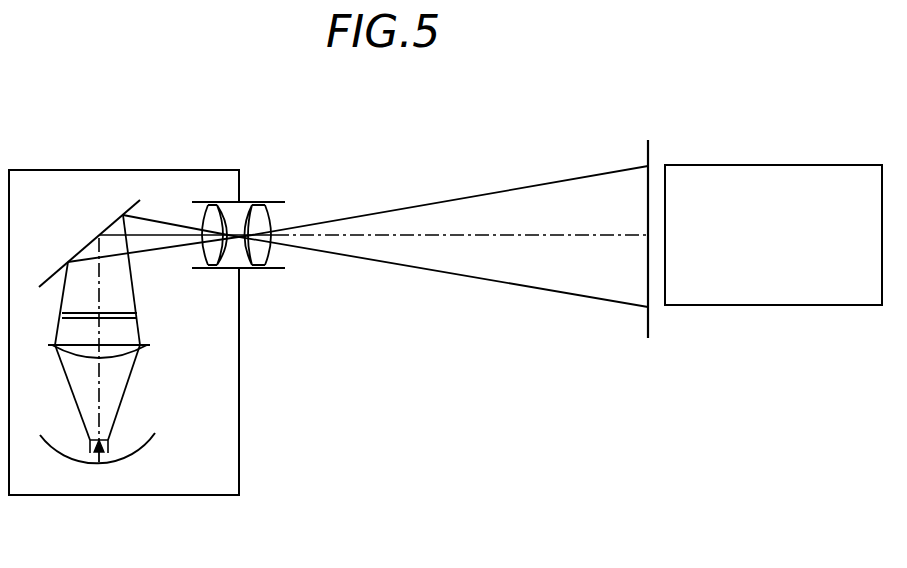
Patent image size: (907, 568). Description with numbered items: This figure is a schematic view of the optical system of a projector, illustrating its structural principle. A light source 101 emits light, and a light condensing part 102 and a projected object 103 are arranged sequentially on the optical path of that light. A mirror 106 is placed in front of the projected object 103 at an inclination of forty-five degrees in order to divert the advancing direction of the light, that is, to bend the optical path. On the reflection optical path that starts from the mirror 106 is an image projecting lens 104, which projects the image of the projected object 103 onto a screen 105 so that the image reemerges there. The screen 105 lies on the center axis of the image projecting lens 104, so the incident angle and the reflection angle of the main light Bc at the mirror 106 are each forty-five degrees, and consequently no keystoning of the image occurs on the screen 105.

The light source 101 is at (145, 445).
The light condensing part 102 is at (130, 353).
The projected object 103 is at (133, 316).
The image projecting lens 104 is at (263, 215).
The screen 105 is at (648, 150).
The mirror 106 is at (135, 203).
The main light Bc is at (527, 235).